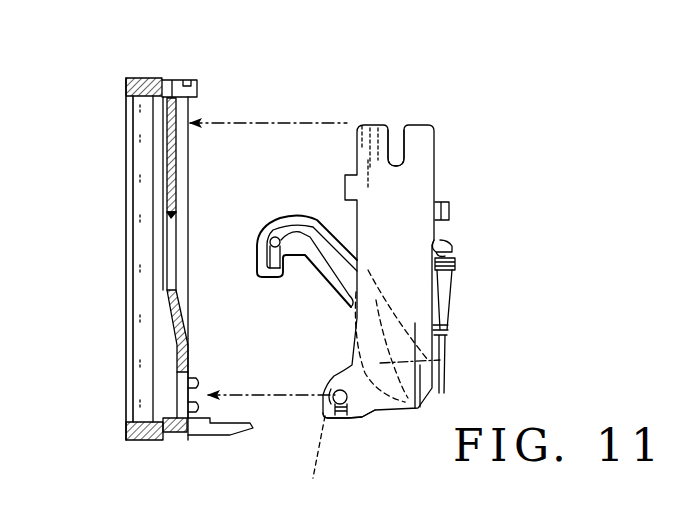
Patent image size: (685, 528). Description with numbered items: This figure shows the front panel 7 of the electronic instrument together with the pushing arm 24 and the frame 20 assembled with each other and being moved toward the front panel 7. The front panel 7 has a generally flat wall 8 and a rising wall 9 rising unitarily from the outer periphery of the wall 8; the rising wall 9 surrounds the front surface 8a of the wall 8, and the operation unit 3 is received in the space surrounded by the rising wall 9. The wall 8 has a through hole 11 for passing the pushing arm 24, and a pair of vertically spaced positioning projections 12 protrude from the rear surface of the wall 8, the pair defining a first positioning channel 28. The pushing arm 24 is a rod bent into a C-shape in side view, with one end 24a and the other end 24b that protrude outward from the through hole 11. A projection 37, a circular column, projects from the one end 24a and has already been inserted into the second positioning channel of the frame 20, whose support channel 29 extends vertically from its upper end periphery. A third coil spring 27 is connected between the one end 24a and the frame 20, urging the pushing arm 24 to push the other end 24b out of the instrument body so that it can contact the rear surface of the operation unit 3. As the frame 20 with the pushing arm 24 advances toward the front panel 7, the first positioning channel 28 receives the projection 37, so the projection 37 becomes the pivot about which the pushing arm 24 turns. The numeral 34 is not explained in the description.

The front panel 7 is at (148, 78).
The rising wall 9 is at (128, 134).
The front surface 8a is at (162, 152).
The wall 8 is at (162, 172).
The through hole 11 is at (172, 222).
The positioning projection 12 is at (200, 378).
The first positioning channel 28 is at (180, 440).
The frame 20 is at (440, 177).
The support channel 29 is at (393, 135).
The third coil spring 27 is at (452, 285).
The pushing arm 24 is at (316, 216).
The other end 24b is at (255, 250).
The one end 24a is at (313, 449).
The projection 37 is at (341, 430).
The operation unit 3 is at (348, 432).
The element 34 is at (682, 18).